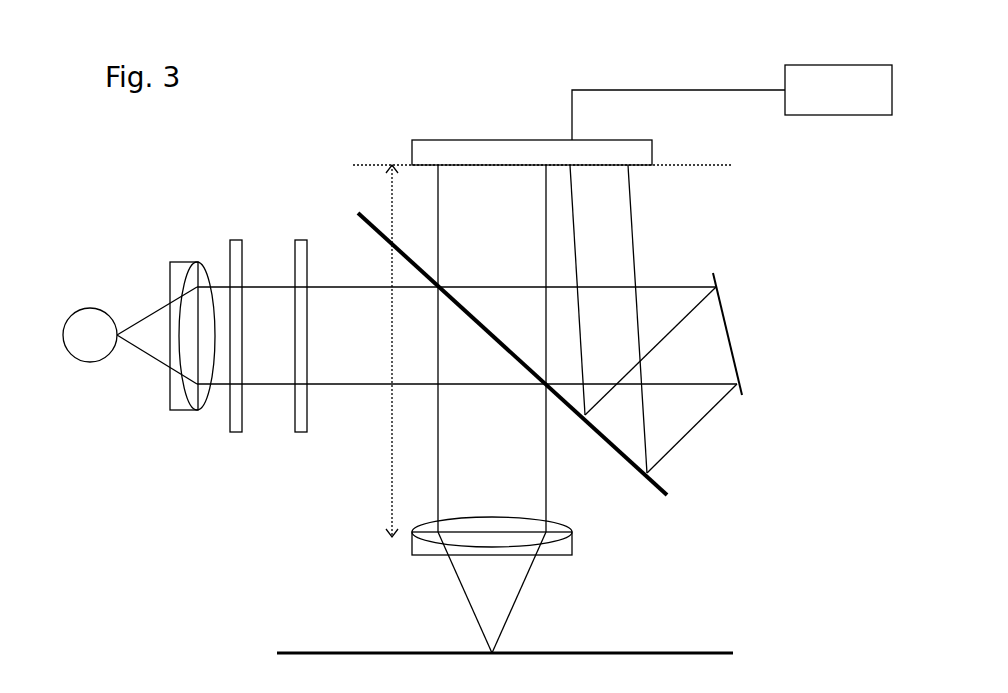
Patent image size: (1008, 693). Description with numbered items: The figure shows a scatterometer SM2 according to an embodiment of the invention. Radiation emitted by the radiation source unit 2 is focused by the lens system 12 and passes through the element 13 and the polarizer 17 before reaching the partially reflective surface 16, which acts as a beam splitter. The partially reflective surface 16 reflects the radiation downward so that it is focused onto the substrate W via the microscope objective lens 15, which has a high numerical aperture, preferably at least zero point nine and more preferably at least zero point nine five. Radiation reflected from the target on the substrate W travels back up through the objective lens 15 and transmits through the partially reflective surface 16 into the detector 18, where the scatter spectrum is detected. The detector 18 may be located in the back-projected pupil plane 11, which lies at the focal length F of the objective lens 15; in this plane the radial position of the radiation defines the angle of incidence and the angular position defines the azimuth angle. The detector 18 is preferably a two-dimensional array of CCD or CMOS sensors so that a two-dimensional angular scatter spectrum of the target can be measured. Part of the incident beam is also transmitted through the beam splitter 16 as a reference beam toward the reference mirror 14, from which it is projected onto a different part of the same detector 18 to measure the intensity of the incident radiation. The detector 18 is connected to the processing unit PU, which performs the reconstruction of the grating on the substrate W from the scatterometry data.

The radiation source unit 2 is at (97, 345).
The back-projected pupil plane 11 is at (717, 164).
The lens system 12 is at (180, 262).
The interference filter 13 is at (239, 240).
The reference mirror 14 is at (715, 283).
The microscope objective lens 15 is at (412, 547).
The partially reflective surface 16 is at (655, 486).
The polarizer 17 is at (304, 240).
The detector 18 is at (447, 140).
The scatterometer SM2 is at (125, 250).
The processing unit PU is at (732, 102).
The focal length F is at (384, 351).
The substrate W is at (621, 653).